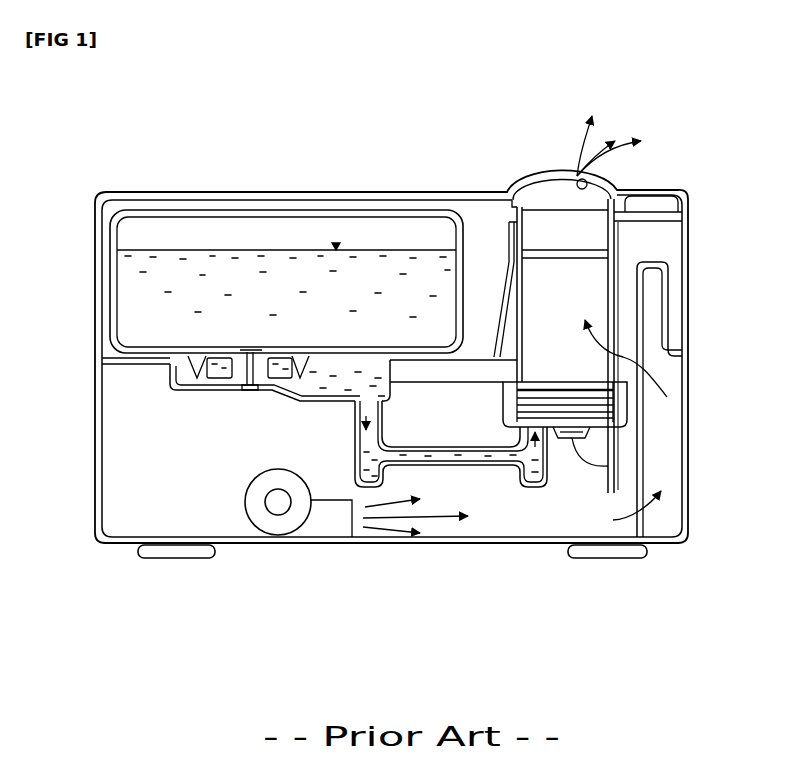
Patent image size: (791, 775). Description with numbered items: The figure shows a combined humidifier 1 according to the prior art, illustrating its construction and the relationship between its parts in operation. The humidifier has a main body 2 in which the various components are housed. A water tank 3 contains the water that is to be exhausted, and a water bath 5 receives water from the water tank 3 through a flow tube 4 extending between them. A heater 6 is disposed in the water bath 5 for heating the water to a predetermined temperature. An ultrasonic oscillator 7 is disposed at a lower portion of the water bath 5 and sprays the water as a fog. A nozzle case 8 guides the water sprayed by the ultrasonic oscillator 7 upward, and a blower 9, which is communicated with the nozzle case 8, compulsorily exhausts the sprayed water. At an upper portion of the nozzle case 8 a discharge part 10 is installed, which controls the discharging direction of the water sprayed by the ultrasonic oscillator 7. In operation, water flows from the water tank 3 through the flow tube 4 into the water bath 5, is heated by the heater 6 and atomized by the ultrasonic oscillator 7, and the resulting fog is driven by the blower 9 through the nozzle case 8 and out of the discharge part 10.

The ultrasonic humidifier 1 is at (412, 178).
The main body 2 is at (97, 398).
The water tank 3 is at (204, 212).
The flow tube 4 is at (480, 462).
The water bath 5 is at (620, 399).
The heater 6 is at (612, 408).
The ultrasonic oscillator 7 is at (608, 466).
The nozzle case 8 is at (612, 282).
The blower 9 is at (322, 522).
The discharge part 10 is at (590, 186).